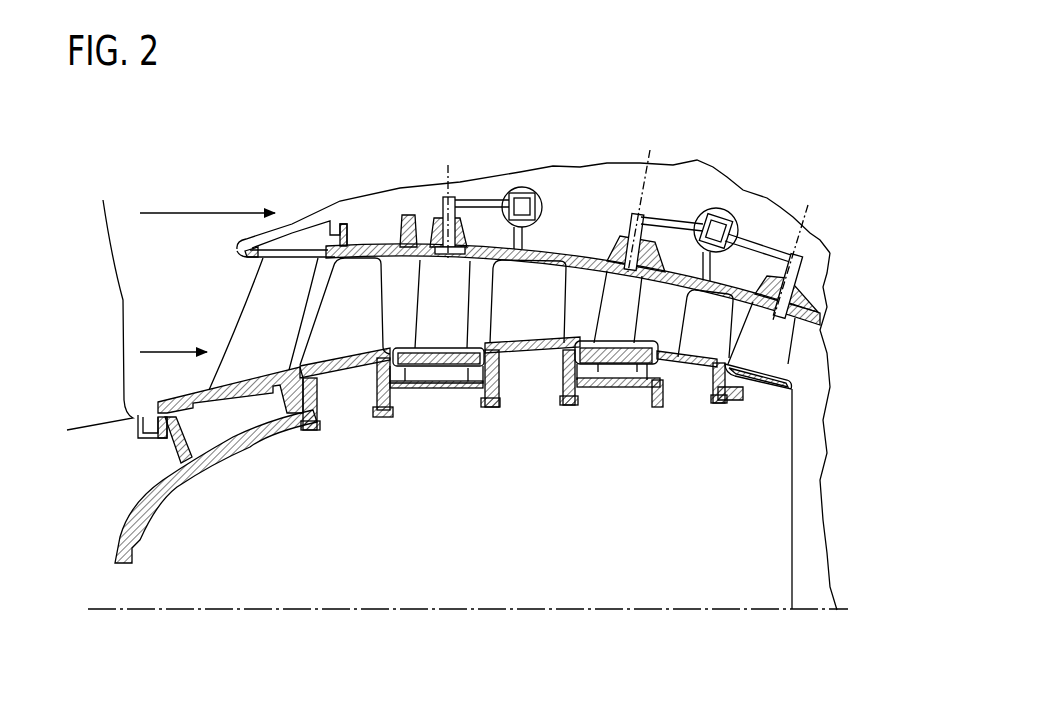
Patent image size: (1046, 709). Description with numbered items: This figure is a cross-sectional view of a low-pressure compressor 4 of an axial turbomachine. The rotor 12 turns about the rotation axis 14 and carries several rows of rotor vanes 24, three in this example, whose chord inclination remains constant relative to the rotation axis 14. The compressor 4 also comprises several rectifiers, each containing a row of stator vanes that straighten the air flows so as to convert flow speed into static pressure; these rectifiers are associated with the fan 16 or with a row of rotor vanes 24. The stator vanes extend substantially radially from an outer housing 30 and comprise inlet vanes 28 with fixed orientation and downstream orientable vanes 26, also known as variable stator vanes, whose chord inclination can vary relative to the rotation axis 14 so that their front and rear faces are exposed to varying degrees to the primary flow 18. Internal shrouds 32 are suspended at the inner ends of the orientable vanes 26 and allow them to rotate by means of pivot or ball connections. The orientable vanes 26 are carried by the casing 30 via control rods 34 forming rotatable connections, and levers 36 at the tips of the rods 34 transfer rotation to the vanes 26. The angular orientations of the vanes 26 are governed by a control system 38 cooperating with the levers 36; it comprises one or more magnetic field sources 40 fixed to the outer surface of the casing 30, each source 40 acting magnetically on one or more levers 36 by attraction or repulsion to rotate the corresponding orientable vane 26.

The low-pressure compressor 4 is at (304, 140).
The rotor 12 is at (132, 553).
The rotation axis 14 is at (393, 608).
The fan 16 is at (110, 333).
The primary flow 18 is at (173, 335).
The rotor vanes 24 is at (364, 316).
The orientable stator vanes 26 is at (457, 308).
The inlet vanes 28 is at (279, 325).
The outer housing 30 is at (541, 247).
The internal shrouds 32 is at (433, 362).
The control rods 34 is at (446, 196).
The levers 36 is at (485, 199).
The control system 38 is at (721, 134).
The magnetic field source 40 is at (542, 193).